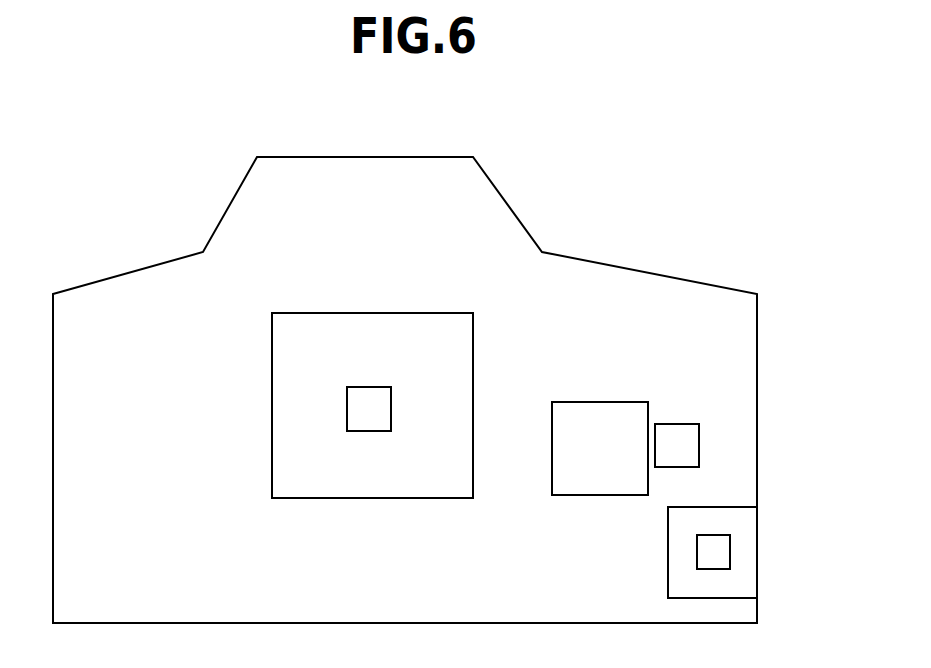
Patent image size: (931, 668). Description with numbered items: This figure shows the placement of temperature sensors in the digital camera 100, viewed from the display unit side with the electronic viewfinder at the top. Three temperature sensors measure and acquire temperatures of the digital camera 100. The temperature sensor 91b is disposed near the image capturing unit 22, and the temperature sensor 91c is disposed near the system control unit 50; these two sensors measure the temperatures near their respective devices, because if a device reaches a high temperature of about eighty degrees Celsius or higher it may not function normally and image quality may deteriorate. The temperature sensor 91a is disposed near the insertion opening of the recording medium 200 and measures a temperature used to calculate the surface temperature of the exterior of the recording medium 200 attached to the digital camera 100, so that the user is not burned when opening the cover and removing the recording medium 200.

The digital camera 100 is at (605, 285).
The image capturing unit 22 is at (375, 313).
The temperature sensor 91b is at (372, 397).
The system control unit 50 is at (605, 415).
The temperature sensor 91c is at (680, 434).
The recording medium 200 is at (730, 516).
The temperature sensor 91a is at (720, 550).